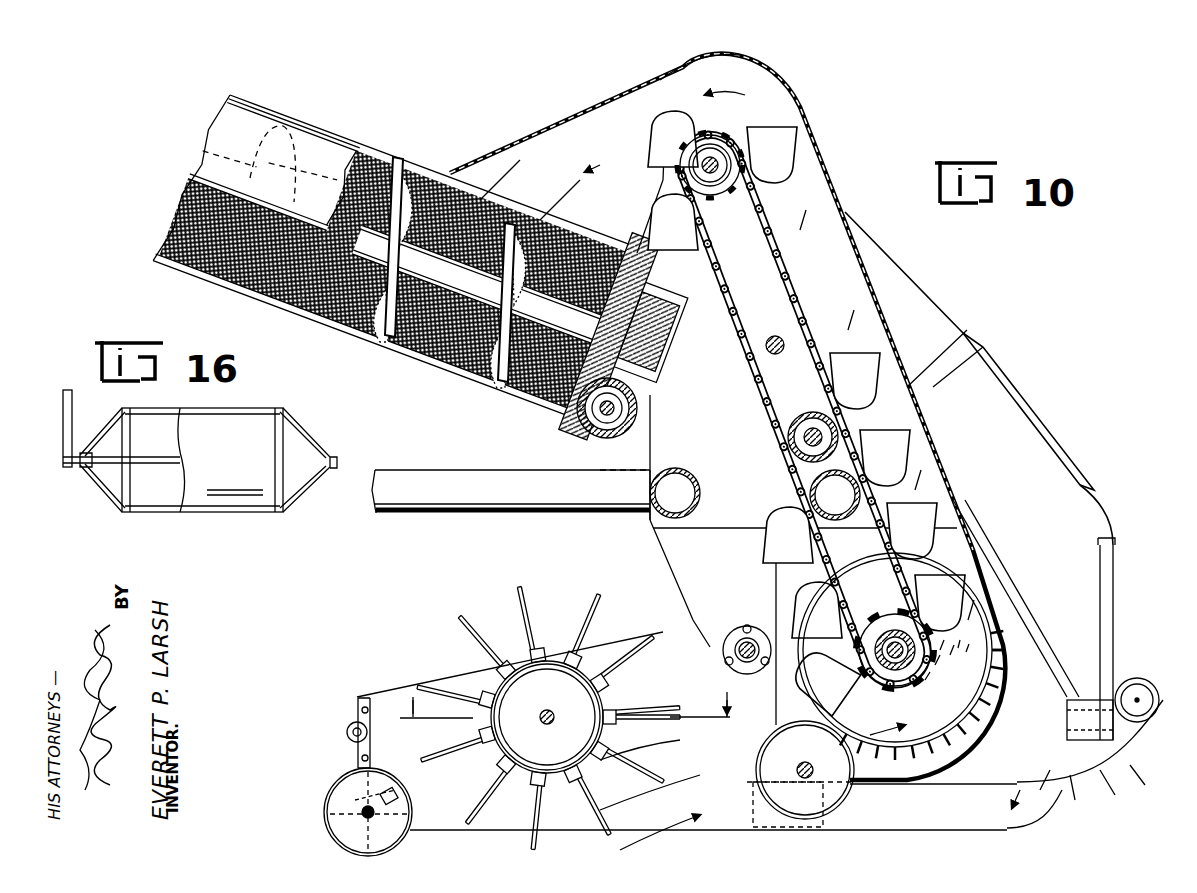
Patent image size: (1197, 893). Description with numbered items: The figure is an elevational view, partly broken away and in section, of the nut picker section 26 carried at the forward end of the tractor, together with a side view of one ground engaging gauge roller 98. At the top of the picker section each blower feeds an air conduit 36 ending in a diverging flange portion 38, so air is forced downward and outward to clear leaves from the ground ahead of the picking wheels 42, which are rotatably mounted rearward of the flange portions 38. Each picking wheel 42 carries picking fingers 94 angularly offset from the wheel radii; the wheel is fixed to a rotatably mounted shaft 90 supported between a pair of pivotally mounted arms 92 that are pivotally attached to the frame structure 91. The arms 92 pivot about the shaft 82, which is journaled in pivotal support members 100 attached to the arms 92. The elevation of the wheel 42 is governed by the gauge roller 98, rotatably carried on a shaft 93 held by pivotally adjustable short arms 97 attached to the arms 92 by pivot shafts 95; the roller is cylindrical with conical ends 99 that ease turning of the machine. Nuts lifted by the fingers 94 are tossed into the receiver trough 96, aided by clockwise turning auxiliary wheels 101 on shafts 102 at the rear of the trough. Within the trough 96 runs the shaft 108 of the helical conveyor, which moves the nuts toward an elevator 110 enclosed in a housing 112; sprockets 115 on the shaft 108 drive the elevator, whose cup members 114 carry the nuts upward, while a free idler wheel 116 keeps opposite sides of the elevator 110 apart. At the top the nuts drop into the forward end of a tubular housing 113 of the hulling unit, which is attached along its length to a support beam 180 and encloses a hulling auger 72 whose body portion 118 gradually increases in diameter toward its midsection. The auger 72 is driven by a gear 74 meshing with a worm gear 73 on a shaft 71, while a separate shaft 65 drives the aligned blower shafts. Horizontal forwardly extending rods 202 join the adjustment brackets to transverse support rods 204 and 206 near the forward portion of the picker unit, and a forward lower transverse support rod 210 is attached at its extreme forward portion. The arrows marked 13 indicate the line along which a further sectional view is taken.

In FIG. 10, the support beams 180 is at (317, 147).
In FIG. 10, the hulling augers 72 is at (398, 168).
In FIG. 10, the tubular housings 113 is at (330, 325).
In FIG. 10, the body portion 118 is at (445, 377).
In FIG. 10, the gear 74 is at (660, 315).
In FIG. 10, the shafts 71 is at (614, 408).
In FIG. 10, the worm gears 73 is at (620, 425).
In FIG. 10, the horizontal forwardly extending rods 202 is at (500, 478).
In FIG. 10, the frame structure 91 is at (652, 458).
In FIG. 10, the transverse support rod 204 is at (698, 478).
In FIG. 10, the transverse support rod 206 is at (812, 500).
In FIG. 10, the cup members 114 is at (772, 548).
In FIG. 10, the free idler wheel 116 is at (803, 415).
In FIG. 10, the shaft 65 is at (773, 336).
In FIG. 10, the elevators 110 is at (823, 282).
In FIG. 10, the housings 112 is at (803, 110).
In FIG. 10, the nut picker section 26 is at (872, 222).
In FIG. 10, the air conduit 36 is at (1000, 392).
In FIG. 10, the diverging flange portion 38 is at (1113, 610).
In FIG. 10, the forward lower horizontal transverse support rod 210 is at (1145, 688).
In FIG. 10, the sprockets 115 is at (880, 630).
In FIG. 10, the shaft 108 is at (895, 665).
In FIG. 10, the receiver trough 96 is at (912, 733).
In FIG. 10, the auxiliary wheels 101 is at (832, 800).
In FIG. 10, the shafts 102 is at (813, 754).
In FIG. 10, the pivotal support members 100 is at (726, 633).
In FIG. 10, the shaft 82 is at (747, 636).
In FIG. 10, the section line 13 is at (569, 697).
In FIG. 10, the picking fingers 94 is at (468, 625).
In FIG. 10, the arms 92 is at (413, 692).
In FIG. 10, the shaft 90 is at (550, 724).
In FIG. 10, the picking wheels 42 is at (515, 745).
In FIG. 10, the gauge roller 98 is at (340, 790).
In FIG. 16, the gauge roller 98 is at (233, 497).
In FIG. 10, the pivot shafts 95 is at (380, 787).
In FIG. 10, the short arms 97 is at (363, 803).
In FIG. 16, the short arms 97 is at (66, 390).
In FIG. 10, the shaft 93 is at (362, 813).
In FIG. 16, the shaft 93 is at (108, 468).
In FIG. 16, the conical ends 99 is at (300, 432).